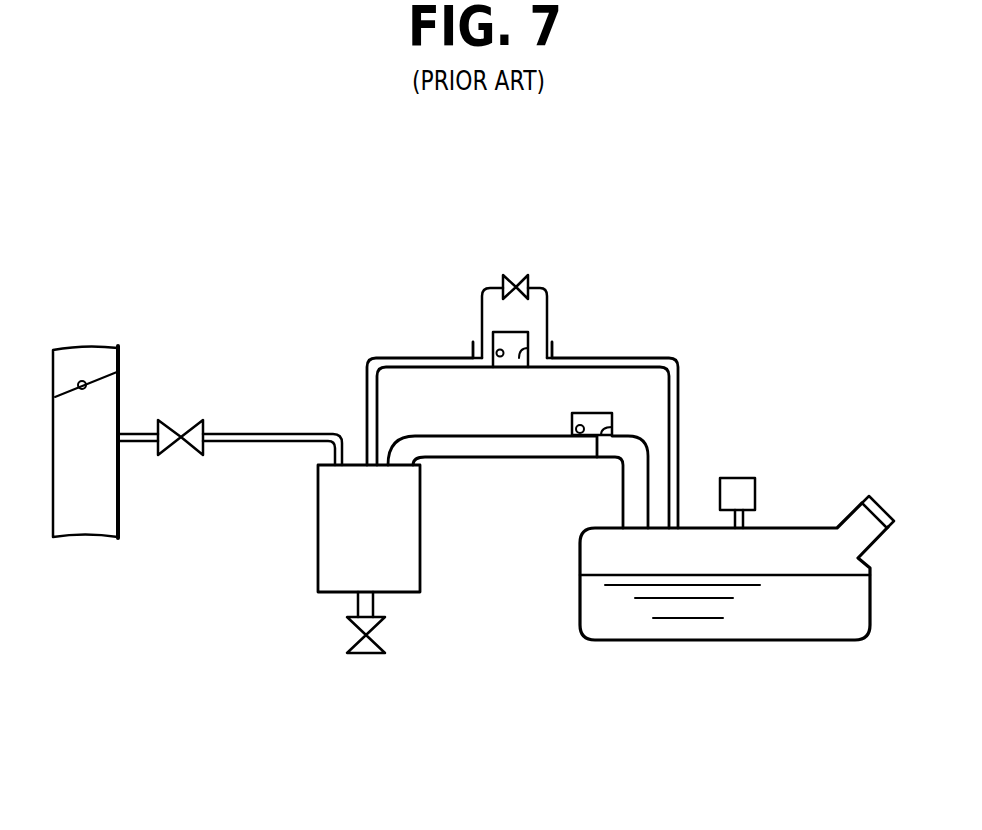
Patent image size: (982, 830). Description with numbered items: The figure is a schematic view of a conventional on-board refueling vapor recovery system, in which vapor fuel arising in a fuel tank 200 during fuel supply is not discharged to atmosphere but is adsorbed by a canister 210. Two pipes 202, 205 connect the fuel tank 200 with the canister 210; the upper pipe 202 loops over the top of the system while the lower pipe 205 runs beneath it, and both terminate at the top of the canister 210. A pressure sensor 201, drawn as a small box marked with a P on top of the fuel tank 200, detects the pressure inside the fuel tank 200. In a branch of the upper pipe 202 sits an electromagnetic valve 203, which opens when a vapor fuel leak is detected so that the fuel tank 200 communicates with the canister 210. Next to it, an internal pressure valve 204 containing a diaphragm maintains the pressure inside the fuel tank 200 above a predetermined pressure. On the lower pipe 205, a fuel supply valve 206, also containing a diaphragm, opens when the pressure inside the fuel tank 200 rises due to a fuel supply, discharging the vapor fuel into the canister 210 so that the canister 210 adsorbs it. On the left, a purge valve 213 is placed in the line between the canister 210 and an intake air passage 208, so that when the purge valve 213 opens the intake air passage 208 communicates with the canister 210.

The fuel tank 200 is at (688, 642).
The pressure sensor 201 is at (755, 478).
The pipe 202 is at (678, 372).
The electromagnetic valve 203 is at (503, 283).
The internal pressure valve 204 is at (527, 333).
The pipe 205 is at (515, 458).
The fuel supply valve 206 is at (605, 412).
The intake air passage 208 is at (80, 522).
The canister 210 is at (318, 560).
The purge valve 213 is at (165, 420).